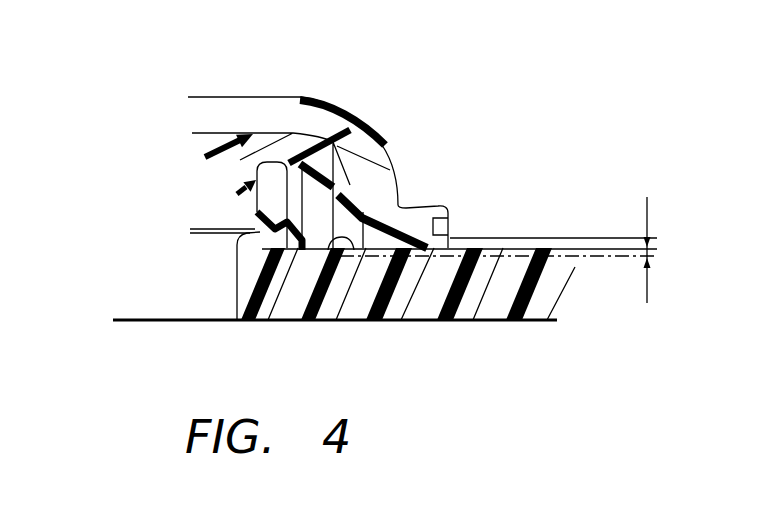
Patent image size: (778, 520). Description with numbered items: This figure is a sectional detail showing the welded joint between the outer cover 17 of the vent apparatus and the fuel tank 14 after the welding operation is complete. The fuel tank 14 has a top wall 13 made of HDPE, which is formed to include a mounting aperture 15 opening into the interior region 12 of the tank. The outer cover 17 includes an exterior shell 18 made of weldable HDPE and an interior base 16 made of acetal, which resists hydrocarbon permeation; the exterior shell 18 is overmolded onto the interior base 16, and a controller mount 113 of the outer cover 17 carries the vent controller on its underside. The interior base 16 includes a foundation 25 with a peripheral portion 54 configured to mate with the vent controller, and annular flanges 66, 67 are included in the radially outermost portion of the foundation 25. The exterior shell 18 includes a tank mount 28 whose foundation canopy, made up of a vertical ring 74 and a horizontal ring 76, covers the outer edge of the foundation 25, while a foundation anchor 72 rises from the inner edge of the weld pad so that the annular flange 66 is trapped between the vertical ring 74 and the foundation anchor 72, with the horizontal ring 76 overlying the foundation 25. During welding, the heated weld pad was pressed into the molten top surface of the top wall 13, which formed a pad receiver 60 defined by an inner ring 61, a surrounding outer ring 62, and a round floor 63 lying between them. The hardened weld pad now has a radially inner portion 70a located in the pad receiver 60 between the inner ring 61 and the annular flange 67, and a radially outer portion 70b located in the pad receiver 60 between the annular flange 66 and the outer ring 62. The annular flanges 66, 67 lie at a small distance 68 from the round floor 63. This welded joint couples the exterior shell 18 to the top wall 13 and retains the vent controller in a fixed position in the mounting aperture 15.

The interior region 12 is at (472, 347).
The top wall 13 is at (568, 300).
The fuel tank 14 is at (574, 231).
The mounting aperture 15 is at (237, 300).
The interior base 16 is at (238, 158).
The outer cover 17 is at (414, 99).
The exterior shell 18 is at (332, 90).
The foundation 25 is at (205, 128).
The tank mount 28 is at (399, 149).
The peripheral portion 54 is at (342, 139).
The pad receiver 60 is at (375, 274).
The inner ring 61 is at (257, 212).
The outer ring 62 is at (450, 237).
The round floor 63 is at (350, 185).
The annular flange 66 is at (383, 196).
The annular flange 67 is at (295, 188).
The small distance 68 is at (647, 218).
The radially inner portion 70a is at (263, 243).
The radially outer portion 70b is at (438, 207).
The foundation anchor 72 is at (313, 188).
The vertical ring 74 is at (382, 175).
The horizontal ring 76 is at (262, 102).
The controller mount 113 is at (289, 90).